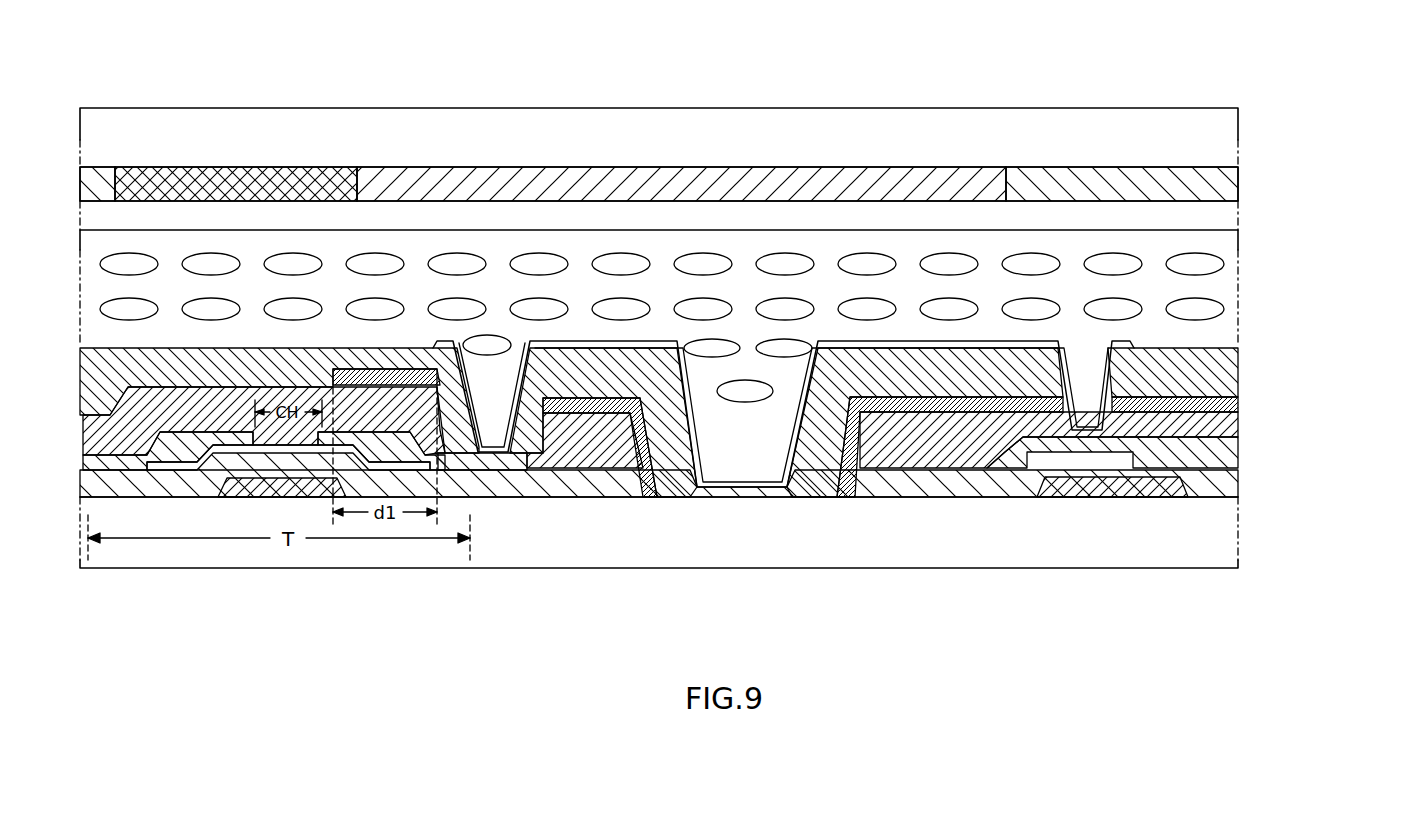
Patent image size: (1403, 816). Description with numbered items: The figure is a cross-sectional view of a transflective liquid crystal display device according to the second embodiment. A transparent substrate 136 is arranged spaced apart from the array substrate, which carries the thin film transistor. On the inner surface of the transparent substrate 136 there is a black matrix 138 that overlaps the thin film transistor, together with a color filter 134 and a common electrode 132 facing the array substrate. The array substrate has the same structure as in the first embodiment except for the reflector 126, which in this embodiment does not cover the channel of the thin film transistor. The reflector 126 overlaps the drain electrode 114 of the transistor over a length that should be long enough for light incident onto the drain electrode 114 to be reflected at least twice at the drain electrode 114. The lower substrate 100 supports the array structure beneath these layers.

The substrate 100 is at (727, 542).
The drain electrode 114 is at (497, 462).
The reflector 126 is at (403, 368).
The common electrode 132 is at (1228, 212).
The color filter 134 is at (900, 167).
The transparent substrate 136 is at (697, 142).
The black matrix 138 is at (240, 168).